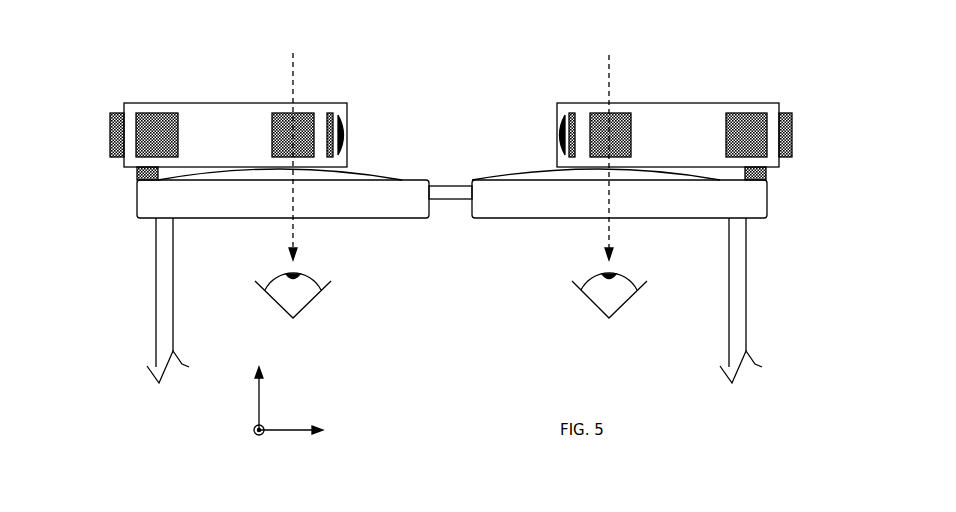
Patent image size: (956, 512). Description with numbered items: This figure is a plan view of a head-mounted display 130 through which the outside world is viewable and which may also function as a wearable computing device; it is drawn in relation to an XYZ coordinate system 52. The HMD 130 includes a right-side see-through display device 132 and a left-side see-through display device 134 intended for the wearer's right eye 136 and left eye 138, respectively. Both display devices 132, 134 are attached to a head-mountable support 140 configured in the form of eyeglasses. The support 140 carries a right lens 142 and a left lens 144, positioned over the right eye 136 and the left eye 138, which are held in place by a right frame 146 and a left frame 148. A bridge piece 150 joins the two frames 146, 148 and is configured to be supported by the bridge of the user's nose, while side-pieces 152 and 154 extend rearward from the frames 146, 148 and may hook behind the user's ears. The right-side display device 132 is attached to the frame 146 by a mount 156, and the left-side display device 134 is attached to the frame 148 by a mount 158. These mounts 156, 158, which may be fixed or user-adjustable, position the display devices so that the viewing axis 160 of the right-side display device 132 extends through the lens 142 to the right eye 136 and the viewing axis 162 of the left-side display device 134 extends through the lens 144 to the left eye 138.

The head-mounted display 130 is at (450, 344).
The right-side see-through display device 132 is at (657, 103).
The left-side see-through display device 134 is at (153, 103).
The right eye 136 is at (588, 302).
The left eye 138 is at (310, 305).
The head-mountable support 140 is at (424, 182).
The right lens 142 is at (515, 177).
The left lens 144 is at (370, 180).
The right frame 146 is at (687, 218).
The left frame 148 is at (212, 218).
The bridge piece 150 is at (455, 199).
The right side-piece 152 is at (746, 304).
The left side-piece 154 is at (156, 277).
The right mount 156 is at (766, 172).
The left mount 158 is at (137, 170).
The viewing axis of right-side display device 160 is at (609, 73).
The viewing axis of left-side display device 162 is at (293, 82).
The XYZ coordinate system 52 is at (291, 430).